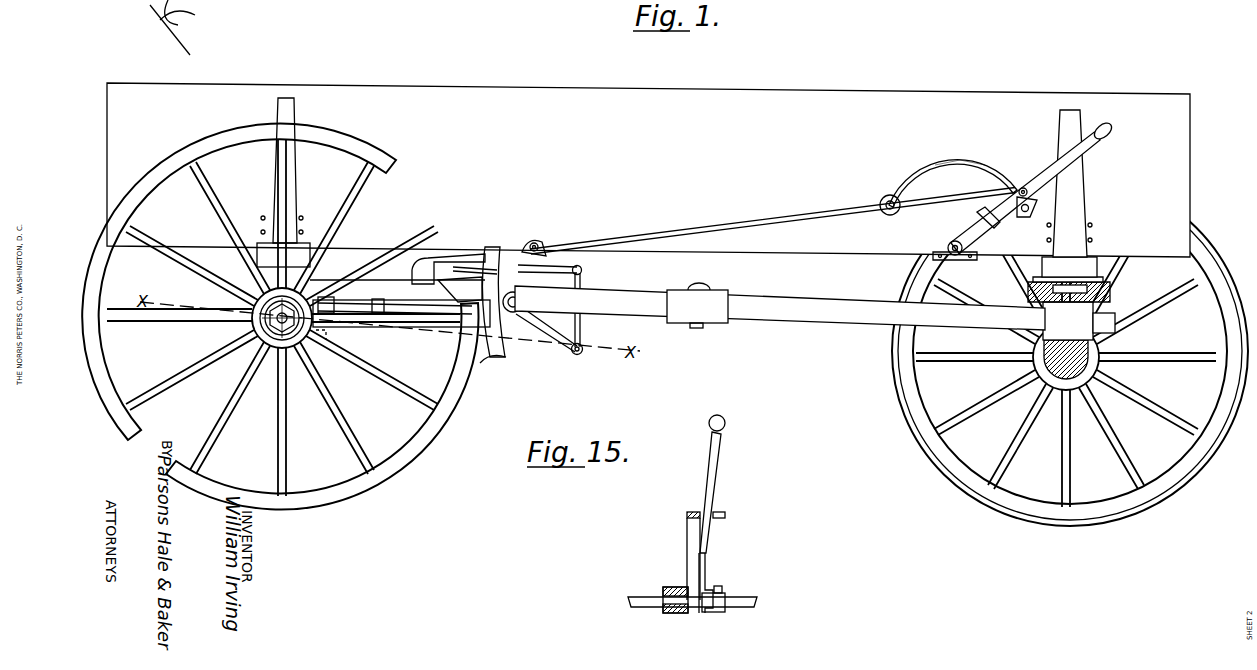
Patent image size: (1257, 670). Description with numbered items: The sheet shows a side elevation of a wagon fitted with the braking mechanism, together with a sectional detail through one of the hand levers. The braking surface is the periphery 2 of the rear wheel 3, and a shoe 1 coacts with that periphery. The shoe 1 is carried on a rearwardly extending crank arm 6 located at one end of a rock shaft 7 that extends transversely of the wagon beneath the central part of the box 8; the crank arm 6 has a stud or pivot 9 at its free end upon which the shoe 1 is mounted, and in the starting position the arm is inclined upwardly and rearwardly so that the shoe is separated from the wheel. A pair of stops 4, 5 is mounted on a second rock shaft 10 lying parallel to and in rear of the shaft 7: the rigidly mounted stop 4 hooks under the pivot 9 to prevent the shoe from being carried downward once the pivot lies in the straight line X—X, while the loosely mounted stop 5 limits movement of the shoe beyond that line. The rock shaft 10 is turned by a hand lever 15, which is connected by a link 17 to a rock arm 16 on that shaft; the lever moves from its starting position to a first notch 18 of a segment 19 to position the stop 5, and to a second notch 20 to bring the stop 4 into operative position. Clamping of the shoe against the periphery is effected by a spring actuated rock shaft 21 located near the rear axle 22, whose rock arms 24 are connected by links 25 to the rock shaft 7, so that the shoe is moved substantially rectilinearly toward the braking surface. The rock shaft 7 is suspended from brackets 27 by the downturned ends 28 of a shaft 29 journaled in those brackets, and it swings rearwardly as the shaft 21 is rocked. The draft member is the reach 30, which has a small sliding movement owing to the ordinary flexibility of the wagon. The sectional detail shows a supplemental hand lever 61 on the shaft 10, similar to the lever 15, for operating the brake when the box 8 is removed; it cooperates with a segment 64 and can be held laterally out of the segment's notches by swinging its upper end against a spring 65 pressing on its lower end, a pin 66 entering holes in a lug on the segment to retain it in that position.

In FIG. 1, the shoe 1 is at (497, 363).
In FIG. 1, the periphery 2 is at (440, 448).
In FIG. 1, the rear wheel 3 is at (373, 151).
In FIG. 1, the stop 4 is at (428, 265).
In FIG. 1, the stop 5 is at (458, 284).
In FIG. 1, the crank arm 6 is at (545, 322).
In FIG. 1, the rock shaft 7 is at (580, 352).
In FIG. 1, the box 8 is at (603, 96).
In FIG. 1, the stud or pivot 9 is at (524, 301).
In FIG. 15, the rock shaft 10 is at (644, 600).
In FIG. 1, the hand lever 15 is at (1053, 171).
In FIG. 1, the rock arm 16 is at (528, 253).
In FIG. 1, the link 17 is at (695, 233).
In FIG. 1, the first notch 18 is at (920, 174).
In FIG. 1, the segment 19 is at (965, 164).
In FIG. 1, the second notch 20 is at (893, 197).
In FIG. 1, the rock shaft 21 is at (322, 345).
In FIG. 1, the rear axle 22 is at (255, 320).
In FIG. 1, the rock arm 24 is at (325, 300).
In FIG. 1, the link 25 is at (355, 320).
In FIG. 1, the bracket 27 is at (575, 265).
In FIG. 1, the downturned end 28 is at (581, 287).
In FIG. 1, the shaft 29 is at (582, 270).
In FIG. 1, the reach 30 is at (780, 306).
In FIG. 15, the hand lever 61 is at (723, 429).
In FIG. 15, the segment 64 is at (690, 533).
In FIG. 15, the spring 65 is at (697, 611).
In FIG. 15, the pin 66 is at (723, 514).